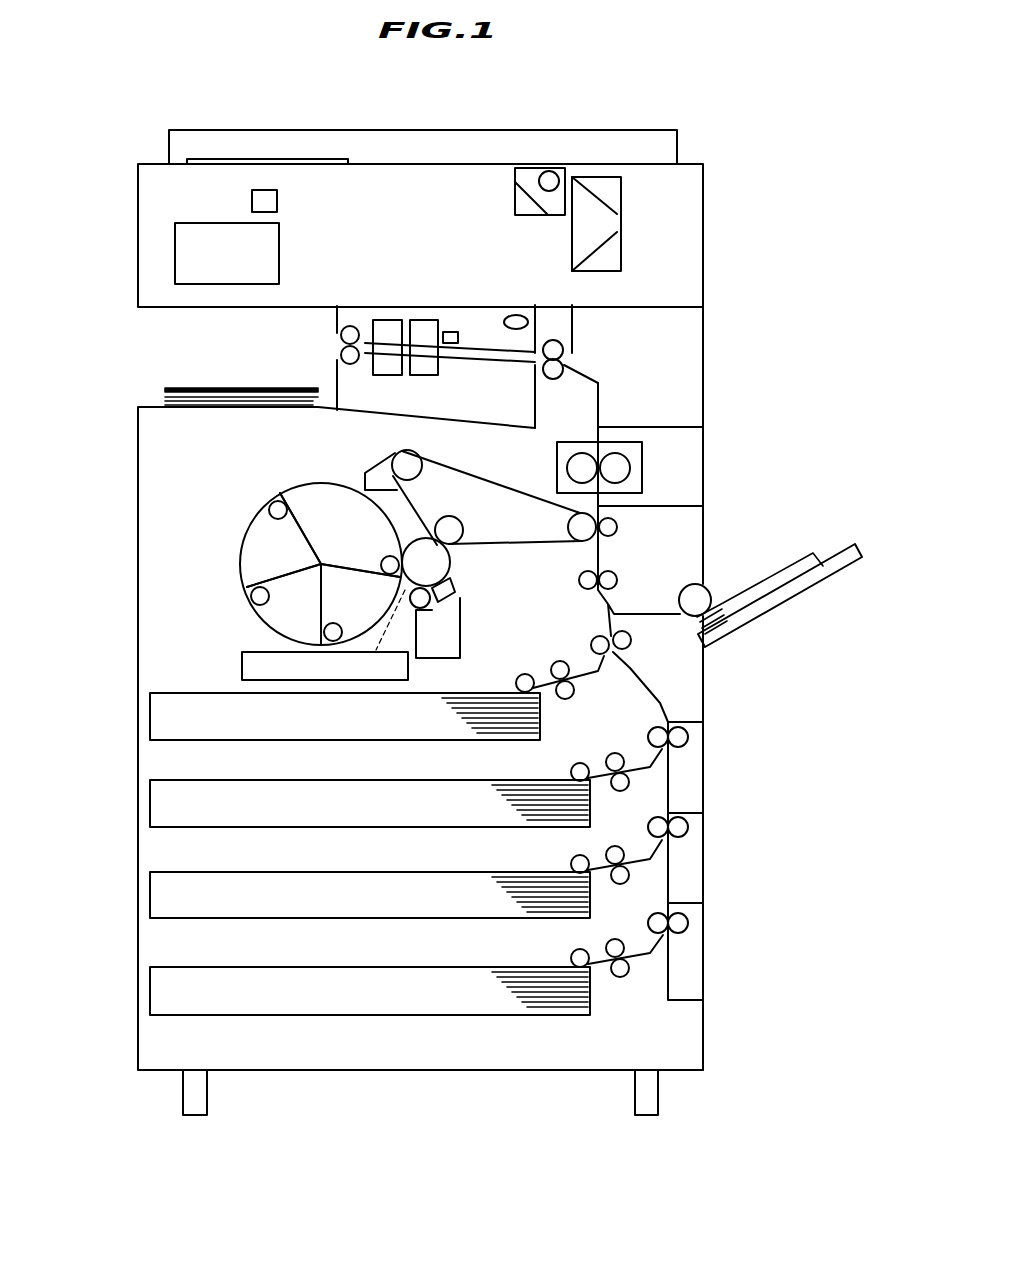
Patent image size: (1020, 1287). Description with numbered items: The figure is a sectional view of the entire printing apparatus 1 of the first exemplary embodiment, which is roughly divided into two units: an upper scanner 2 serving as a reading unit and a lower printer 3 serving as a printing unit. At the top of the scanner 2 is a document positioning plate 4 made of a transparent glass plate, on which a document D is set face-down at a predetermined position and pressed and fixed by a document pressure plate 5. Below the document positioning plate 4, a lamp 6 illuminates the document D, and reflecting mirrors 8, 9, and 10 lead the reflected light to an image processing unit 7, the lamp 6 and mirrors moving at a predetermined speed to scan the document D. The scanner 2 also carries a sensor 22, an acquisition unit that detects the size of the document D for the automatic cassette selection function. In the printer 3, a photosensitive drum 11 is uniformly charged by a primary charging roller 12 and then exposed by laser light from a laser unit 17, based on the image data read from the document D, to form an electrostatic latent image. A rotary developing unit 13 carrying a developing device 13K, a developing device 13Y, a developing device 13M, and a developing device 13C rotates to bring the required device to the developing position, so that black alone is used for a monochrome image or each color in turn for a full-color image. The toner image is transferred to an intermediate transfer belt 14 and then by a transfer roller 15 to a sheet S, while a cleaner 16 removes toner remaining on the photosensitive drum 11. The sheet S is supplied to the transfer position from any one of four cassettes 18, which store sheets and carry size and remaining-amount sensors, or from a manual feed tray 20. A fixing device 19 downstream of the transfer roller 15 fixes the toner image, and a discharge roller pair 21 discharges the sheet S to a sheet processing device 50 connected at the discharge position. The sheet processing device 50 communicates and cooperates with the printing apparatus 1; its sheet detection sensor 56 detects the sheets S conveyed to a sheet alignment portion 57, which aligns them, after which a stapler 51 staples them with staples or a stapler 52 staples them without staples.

The printing apparatus 1 is at (703, 172).
The scanner 2 is at (138, 200).
The printer 3 is at (138, 507).
The document positioning plate 4 is at (475, 163).
The document pressure plate 5 is at (310, 130).
The lamp 6 is at (551, 171).
The image processing unit 7 is at (175, 258).
The reflecting mirror 8 is at (530, 204).
The reflecting mirror 9 is at (600, 196).
The reflecting mirror 10 is at (600, 252).
The document D is at (243, 158).
The sensor 22 is at (252, 202).
The sheet processing device 50 is at (313, 327).
The stapler 51 is at (385, 320).
The stapler 52 is at (422, 320).
The sheet detection sensor 56 is at (451, 332).
The sheet alignment portion 57 is at (493, 347).
The discharge roller pair 21 is at (568, 353).
The photosensitive drum 11 is at (440, 563).
The primary charging roller 12 is at (426, 612).
The rotary developing unit 13 is at (265, 481).
The developing device 13K is at (328, 503).
The developing device 13C is at (255, 551).
The developing device 13M is at (267, 613).
The developing device 13Y is at (338, 598).
The intermediate transfer belt 14 is at (492, 473).
The transfer roller 15 is at (617, 520).
The cleaner 16 is at (447, 590).
The laser unit 17 is at (242, 663).
The cassettes 18 is at (150, 987).
The fixing device 19 is at (642, 444).
The manual feed tray 20 is at (777, 613).
The sheet S is at (165, 392).